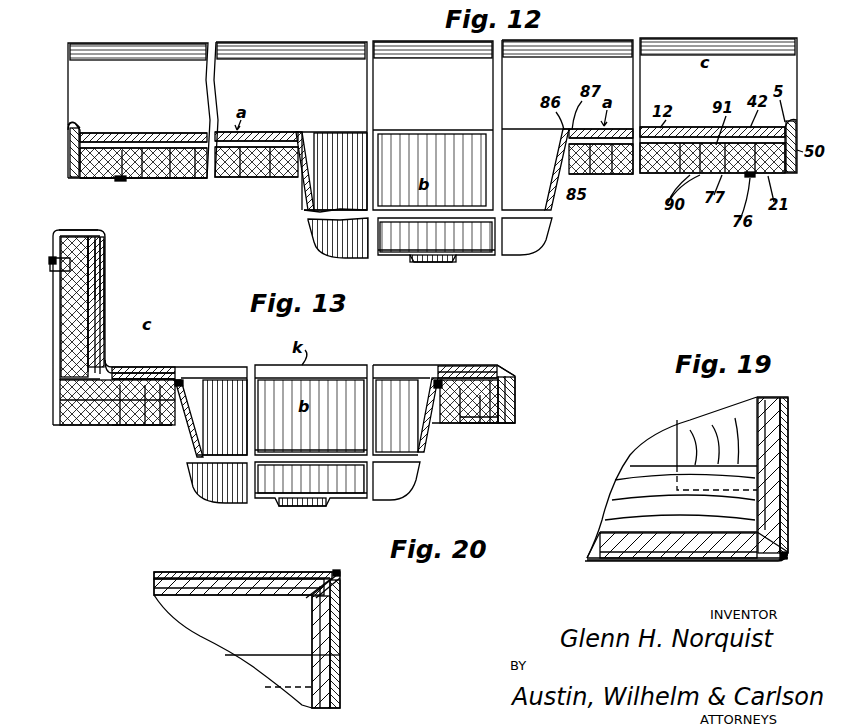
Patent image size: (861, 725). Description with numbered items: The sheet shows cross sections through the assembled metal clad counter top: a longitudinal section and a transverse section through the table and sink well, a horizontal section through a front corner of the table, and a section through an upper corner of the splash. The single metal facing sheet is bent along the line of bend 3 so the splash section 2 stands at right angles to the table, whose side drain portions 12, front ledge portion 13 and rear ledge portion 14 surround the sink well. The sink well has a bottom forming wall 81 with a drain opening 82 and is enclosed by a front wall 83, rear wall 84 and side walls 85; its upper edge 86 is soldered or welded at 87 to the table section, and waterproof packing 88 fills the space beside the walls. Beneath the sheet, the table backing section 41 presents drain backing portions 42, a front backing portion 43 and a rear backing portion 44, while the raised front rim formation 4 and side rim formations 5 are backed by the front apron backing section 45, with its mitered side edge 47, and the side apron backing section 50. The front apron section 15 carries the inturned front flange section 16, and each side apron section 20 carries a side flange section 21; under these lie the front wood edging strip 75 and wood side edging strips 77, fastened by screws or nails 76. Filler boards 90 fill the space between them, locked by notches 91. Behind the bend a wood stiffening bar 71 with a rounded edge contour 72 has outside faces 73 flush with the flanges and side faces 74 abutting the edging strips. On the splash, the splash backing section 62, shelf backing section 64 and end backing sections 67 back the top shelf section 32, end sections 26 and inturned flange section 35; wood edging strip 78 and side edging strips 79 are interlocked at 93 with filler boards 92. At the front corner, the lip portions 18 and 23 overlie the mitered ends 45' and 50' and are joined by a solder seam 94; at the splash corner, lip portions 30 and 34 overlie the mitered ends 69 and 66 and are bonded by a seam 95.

In FIG. 13, the splash section 2 is at (104, 332).
In FIG. 13, the line of bend 3 is at (108, 372).
In FIG. 13, the front rim formation 4 is at (510, 360).
In FIG. 12, the side rim formation 5 is at (76, 125).
In FIG. 12, the side drain portion 12 is at (176, 133).
In FIG. 13, the front ledge portion 13 is at (458, 378).
In FIG. 13, the rear ledge portion 14 is at (140, 372).
In FIG. 19, the front apron section 15 is at (596, 562).
In FIG. 13, the front flange section 16 is at (482, 426).
In FIG. 19, the lip portion 18 is at (742, 560).
In FIG. 19, the side apron section 20 is at (788, 438).
In FIG. 12, the side flange section 21 is at (112, 178).
In FIG. 19, the overhanging lip portion 23 is at (788, 548).
In FIG. 20, the end section 26 is at (340, 642).
In FIG. 20, the lip portion 30 is at (338, 592).
In FIG. 13, the top shelf section 32 is at (92, 223).
In FIG. 20, the top shelf section 32 is at (218, 552).
In FIG. 20, the lip portion 34 is at (314, 590).
In FIG. 13, the flange section 35 is at (52, 272).
In FIG. 12, the table backing section 41 is at (582, 172).
In FIG. 13, the table backing section 41 is at (496, 426).
In FIG. 12, the drain backing portion 42 is at (104, 133).
In FIG. 13, the front backing portion 43 is at (506, 368).
In FIG. 13, the rear backing portion 44 is at (160, 378).
In FIG. 13, the front apron backing section 45 is at (510, 403).
In FIG. 19, the front apron backing section 45 is at (687, 561).
In FIG. 19, the mitered end of front apron backing section 45' is at (772, 560).
In FIG. 13, the side edge of front apron backing section 47 is at (515, 374).
In FIG. 12, the side apron backing section 50 is at (58, 150).
In FIG. 19, the side apron backing section 50 is at (791, 464).
In FIG. 19, the front end of side apron backing section 50' is at (797, 465).
In FIG. 13, the splash backing section 62 is at (90, 290).
In FIG. 13, the shelf backing section 64 is at (68, 230).
In FIG. 20, the shelf backing section 64 is at (252, 583).
In FIG. 20, the end of shelf backing section 66 is at (300, 598).
In FIG. 20, the end backing section 67 is at (325, 676).
In FIG. 20, the upper end of end backing section 69 is at (340, 612).
In FIG. 13, the wood stiffening bar 71 is at (72, 426).
In FIG. 13, the rounded edge contour 72 is at (88, 428).
In FIG. 13, the outside face of stiffening bar 73 is at (60, 415).
In FIG. 13, the side face of stiffening bar 74 is at (104, 358).
In FIG. 13, the front wood edging strip 75 is at (462, 426).
In FIG. 19, the front wood edging strip 75 is at (640, 484).
In FIG. 12, the screws or nails 76 is at (121, 182).
In FIG. 12, the wood side edging strip 77 is at (86, 178).
In FIG. 19, the wood side edging strip 77 is at (698, 425).
In FIG. 13, the wood edging strip 78 is at (102, 250).
In FIG. 20, the wood edging strip 78 is at (218, 642).
In FIG. 20, the side edging strip 79 is at (280, 675).
In FIG. 12, the bottom forming wall 81 is at (401, 240).
In FIG. 13, the bottom forming wall 81 is at (350, 495).
In FIG. 12, the drain opening 82 is at (440, 257).
In FIG. 13, the drain opening 82 is at (296, 507).
In FIG. 13, the front wall 83 is at (418, 436).
In FIG. 12, the rear wall 84 is at (432, 170).
In FIG. 13, the rear wall 84 is at (211, 411).
In FIG. 12, the side wall 85 is at (312, 176).
In FIG. 13, the side wall 85 is at (311, 438).
In FIG. 12, the upper edge of enclosing walls 86 is at (304, 134).
In FIG. 13, the upper edge of enclosing walls 86 is at (434, 378).
In FIG. 12, the soldering or welding metal 87 is at (296, 135).
In FIG. 13, the soldering or welding metal 87 is at (440, 380).
In FIG. 12, the waterproof packing 88 is at (340, 171).
In FIG. 13, the waterproof packing 88 is at (180, 380).
In FIG. 12, the filler boards 90 is at (200, 180).
In FIG. 13, the filler boards 90 is at (154, 428).
In FIG. 12, the notch or groove 91 is at (136, 160).
In FIG. 13, the notch or groove 91 is at (478, 376).
In FIG. 13, the filler boards 92 is at (104, 312).
In FIG. 13, the notched interlock 93 is at (96, 268).
In FIG. 19, the solder or welding metal seam 94 is at (787, 560).
In FIG. 20, the solder or welding metal seam 95 is at (340, 573).